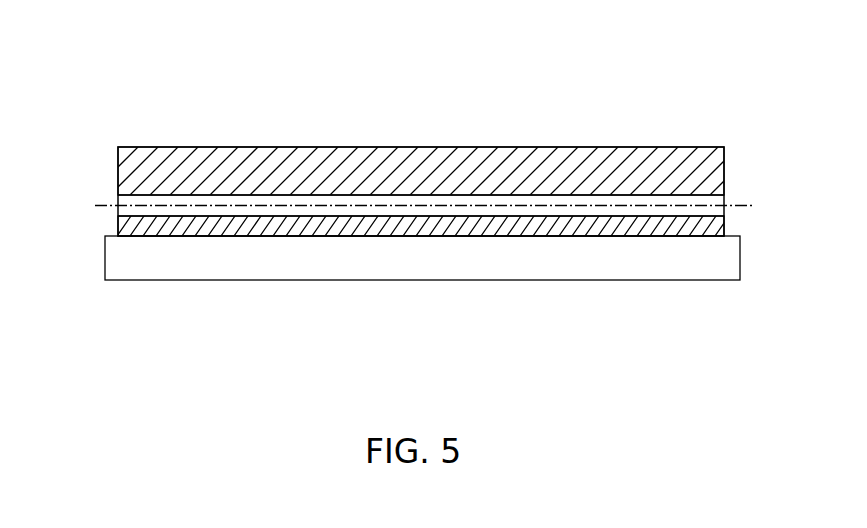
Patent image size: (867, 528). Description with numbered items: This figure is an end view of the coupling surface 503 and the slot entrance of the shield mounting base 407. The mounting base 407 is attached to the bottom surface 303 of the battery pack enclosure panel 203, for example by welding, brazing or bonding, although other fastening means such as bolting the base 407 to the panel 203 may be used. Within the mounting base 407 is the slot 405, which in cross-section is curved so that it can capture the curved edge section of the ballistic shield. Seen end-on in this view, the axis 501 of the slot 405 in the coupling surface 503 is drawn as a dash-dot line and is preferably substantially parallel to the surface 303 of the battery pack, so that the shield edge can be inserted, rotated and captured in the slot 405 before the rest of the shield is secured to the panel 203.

The battery pack enclosure panel 203 is at (442, 268).
The bottom surface 303 is at (110, 235).
The slot 405 is at (694, 188).
The shield mounting base 407 is at (518, 122).
The axis 501 is at (97, 206).
The coupling surface 503 is at (598, 162).